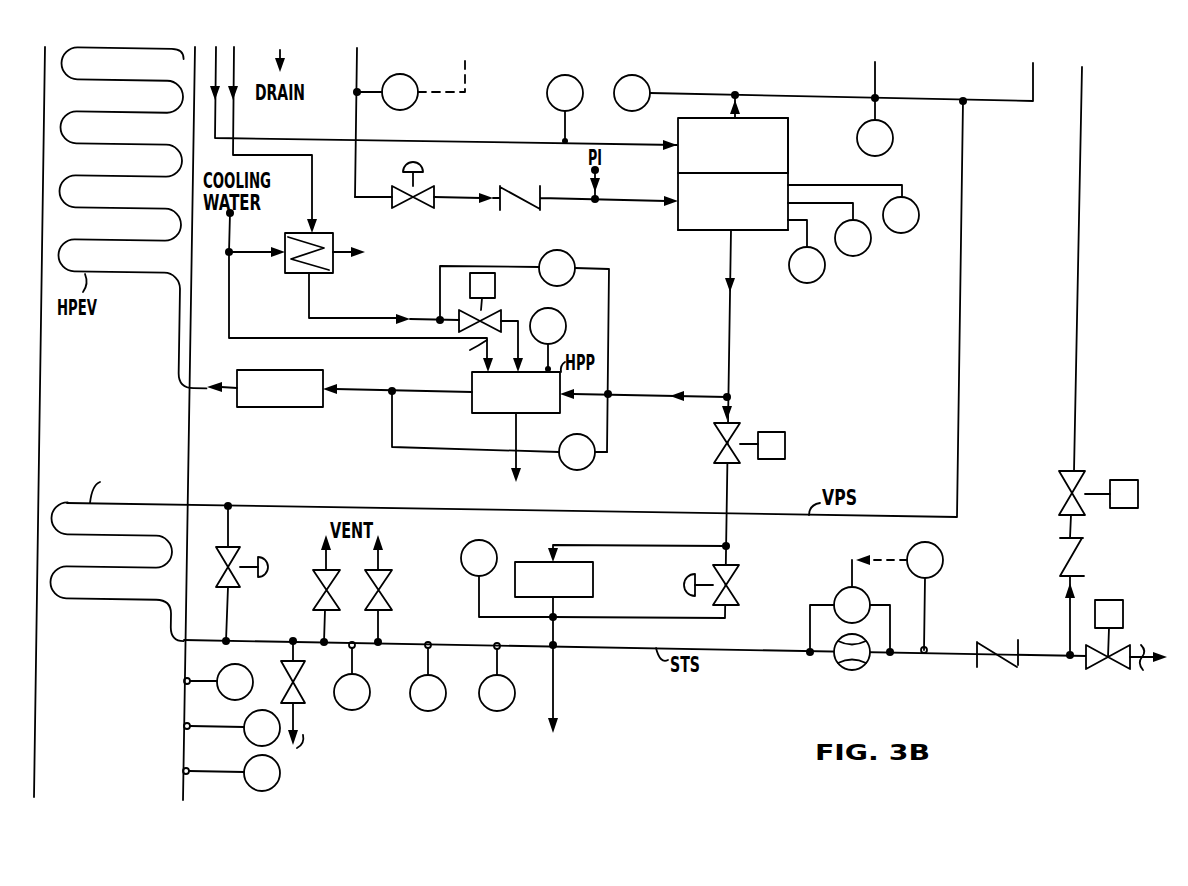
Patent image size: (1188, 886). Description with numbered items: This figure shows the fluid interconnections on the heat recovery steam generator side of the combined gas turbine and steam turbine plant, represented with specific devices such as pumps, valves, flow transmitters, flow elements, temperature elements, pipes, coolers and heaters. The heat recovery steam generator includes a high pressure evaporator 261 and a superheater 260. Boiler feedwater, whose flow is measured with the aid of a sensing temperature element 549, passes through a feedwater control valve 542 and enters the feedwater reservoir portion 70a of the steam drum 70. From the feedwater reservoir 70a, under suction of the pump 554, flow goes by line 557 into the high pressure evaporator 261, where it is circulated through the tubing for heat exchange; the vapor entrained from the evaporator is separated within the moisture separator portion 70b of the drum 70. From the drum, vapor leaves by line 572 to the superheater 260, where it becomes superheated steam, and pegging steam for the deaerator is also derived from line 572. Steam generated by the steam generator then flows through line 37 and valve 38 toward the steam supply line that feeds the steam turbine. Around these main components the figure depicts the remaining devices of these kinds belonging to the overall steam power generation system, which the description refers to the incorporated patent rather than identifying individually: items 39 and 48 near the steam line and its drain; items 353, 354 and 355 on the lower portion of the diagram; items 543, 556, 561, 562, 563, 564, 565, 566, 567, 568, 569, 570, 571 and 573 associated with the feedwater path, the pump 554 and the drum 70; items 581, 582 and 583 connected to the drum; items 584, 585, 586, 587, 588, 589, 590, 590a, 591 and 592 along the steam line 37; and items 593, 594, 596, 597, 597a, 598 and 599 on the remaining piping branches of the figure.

The high pressure evaporator 261 is at (123, 274).
The superheater 260 is at (92, 602).
The line 37 is at (240, 640).
The valve 38 is at (1092, 672).
The steam outlet line 39 is at (1142, 648).
The drain valve 48 is at (284, 677).
The steam drum 70 is at (682, 230).
The feedwater reservoir portion 70a is at (752, 230).
The moisture separator portion 70b is at (780, 118).
The temperature element 353 is at (252, 786).
The temperature element 354 is at (252, 740).
The pressure switch 355 is at (230, 700).
The feedwater control valve 542 is at (400, 184).
The check valve 543 is at (525, 188).
The temperature element 549 is at (405, 110).
The pump 554 is at (468, 413).
The heater 556 is at (284, 370).
The line 557 is at (212, 380).
The heat exchanger 561 is at (330, 238).
The motor operated valve 562 is at (463, 311).
The cooling water line 563 is at (462, 356).
The pump drain line 564 is at (510, 460).
The temperature element 565 is at (550, 312).
The valve motor 566 is at (465, 272).
The cooling water supply line 567 is at (231, 276).
The pressure switch 568 is at (592, 462).
The pressure switch 569 is at (569, 256).
The pressure switch 570 is at (643, 78).
The temperature switch 571 is at (548, 90).
The line 572 is at (764, 95).
The pressure transmitter 573 is at (902, 118).
The level switch 581 is at (918, 206).
The level switch 582 is at (871, 236).
The level transmitter 583 is at (825, 265).
The flow element 584 is at (840, 666).
The check valve 585 is at (998, 653).
The flow transmitter 586 is at (846, 590).
The temperature element 587 is at (918, 546).
The valve 588 is at (218, 557).
The temperature element 589 is at (352, 710).
The vent valve 590 is at (316, 590).
The vent valve 590a is at (360, 592).
The temperature element 591 is at (424, 711).
The pressure transmitter 592 is at (500, 711).
The check valve 593 is at (1066, 556).
The motor operated valve 594 is at (1064, 486).
The motor operated valve 596 is at (717, 428).
The control valve 597 is at (752, 570).
The cooler drain line 597a is at (553, 690).
The conductivity element 598 is at (495, 530).
The sample cooler 599 is at (594, 580).